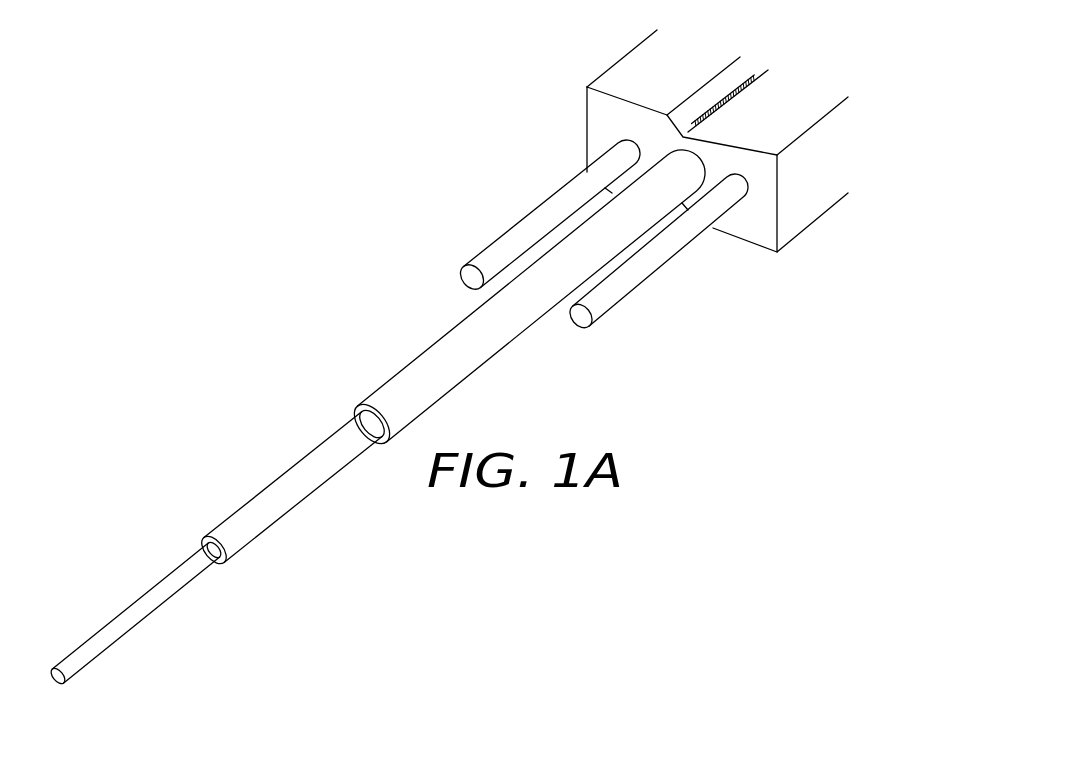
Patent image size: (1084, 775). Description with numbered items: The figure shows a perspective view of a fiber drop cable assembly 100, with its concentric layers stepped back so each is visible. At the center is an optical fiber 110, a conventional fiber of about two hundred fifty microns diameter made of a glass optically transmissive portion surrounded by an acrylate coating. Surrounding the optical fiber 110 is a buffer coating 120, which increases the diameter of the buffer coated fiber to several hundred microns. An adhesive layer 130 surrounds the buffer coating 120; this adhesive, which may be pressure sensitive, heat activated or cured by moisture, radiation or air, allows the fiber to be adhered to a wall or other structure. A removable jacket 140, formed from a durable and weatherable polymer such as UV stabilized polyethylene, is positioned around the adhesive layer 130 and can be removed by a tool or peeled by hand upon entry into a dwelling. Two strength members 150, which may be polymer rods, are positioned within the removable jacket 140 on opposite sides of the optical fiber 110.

The fiber drop cable assembly 100 is at (278, 203).
The optical fiber 110 is at (138, 612).
The buffer coating 120 is at (302, 467).
The adhesive layer 130 is at (420, 367).
The removable jacket 140 is at (603, 118).
The strength members 150 is at (617, 277).